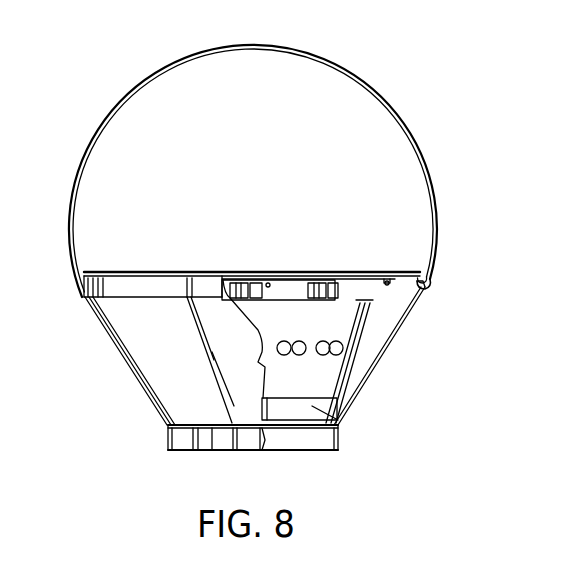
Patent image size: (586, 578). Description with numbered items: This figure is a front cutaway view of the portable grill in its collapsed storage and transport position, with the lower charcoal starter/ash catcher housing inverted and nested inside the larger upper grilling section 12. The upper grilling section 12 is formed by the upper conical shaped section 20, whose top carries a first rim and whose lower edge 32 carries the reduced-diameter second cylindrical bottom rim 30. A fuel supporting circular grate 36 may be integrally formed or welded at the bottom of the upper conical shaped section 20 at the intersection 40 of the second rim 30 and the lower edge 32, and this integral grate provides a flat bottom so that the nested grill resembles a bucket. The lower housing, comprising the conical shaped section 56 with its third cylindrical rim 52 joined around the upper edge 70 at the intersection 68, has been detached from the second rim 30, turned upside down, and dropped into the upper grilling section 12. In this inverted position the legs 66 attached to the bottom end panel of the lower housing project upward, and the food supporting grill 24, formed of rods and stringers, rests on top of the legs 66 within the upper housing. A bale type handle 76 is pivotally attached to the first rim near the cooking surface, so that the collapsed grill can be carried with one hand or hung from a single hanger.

The upper grilling section 12 is at (108, 339).
The upper conical shaped section 20 is at (177, 378).
The food supporting grill 24 is at (280, 275).
The second cylindrical bottom rim 30 is at (172, 432).
The lower edge 32 is at (214, 440).
The fuel supporting circular grate 36 is at (244, 450).
The intersection 40 is at (162, 427).
The third cylindrical rim 52 is at (338, 428).
The conical shaped section 56 is at (338, 318).
The legs 66 is at (340, 298).
The intersection 68 is at (342, 402).
The upper edge 70 is at (348, 380).
The bale type handle 76 is at (371, 89).